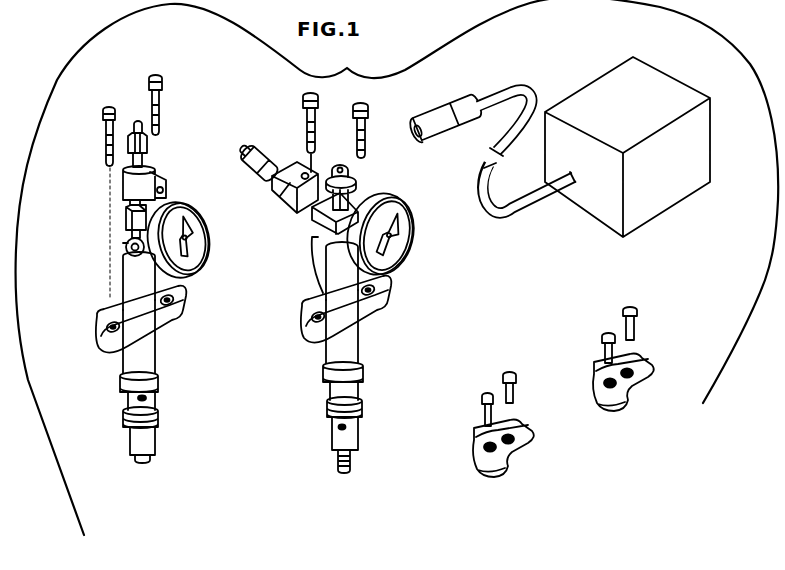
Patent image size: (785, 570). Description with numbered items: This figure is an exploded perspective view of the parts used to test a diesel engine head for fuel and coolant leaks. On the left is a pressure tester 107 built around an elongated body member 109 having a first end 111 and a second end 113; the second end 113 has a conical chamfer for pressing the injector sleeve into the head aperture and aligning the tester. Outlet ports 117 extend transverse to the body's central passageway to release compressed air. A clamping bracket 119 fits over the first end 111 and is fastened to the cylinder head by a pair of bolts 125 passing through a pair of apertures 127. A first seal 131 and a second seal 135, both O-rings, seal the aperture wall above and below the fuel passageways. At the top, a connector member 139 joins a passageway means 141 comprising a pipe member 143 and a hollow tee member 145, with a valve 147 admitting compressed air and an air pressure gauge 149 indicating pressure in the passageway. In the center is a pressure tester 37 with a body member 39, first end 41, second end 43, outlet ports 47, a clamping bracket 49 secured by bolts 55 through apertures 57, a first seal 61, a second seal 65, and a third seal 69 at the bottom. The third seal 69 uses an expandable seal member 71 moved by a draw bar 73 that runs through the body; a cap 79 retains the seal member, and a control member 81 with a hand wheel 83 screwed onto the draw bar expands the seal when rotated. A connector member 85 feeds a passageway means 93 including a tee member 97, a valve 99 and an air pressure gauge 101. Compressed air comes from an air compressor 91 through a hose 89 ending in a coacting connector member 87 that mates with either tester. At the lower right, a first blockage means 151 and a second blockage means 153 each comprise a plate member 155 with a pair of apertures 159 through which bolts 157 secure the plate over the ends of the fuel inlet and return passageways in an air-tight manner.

The pressure tester 37 is at (333, 305).
The body member 39 is at (325, 285).
The first end 41 is at (327, 268).
The second end 43 is at (356, 440).
The outlet ports 47 is at (340, 427).
The clamping bracket 49 is at (300, 347).
The bolts 55 is at (307, 116).
The apertures 57 is at (378, 291).
The first seal 61 is at (365, 366).
The second seal 65 is at (364, 400).
The third seal 69 is at (352, 461).
The expandable seal member 71 is at (340, 462).
The draw bar 73 is at (362, 175).
The cap 79 is at (344, 474).
The control member 81 is at (357, 185).
The hand wheel 83 is at (338, 169).
The connector member 85 is at (265, 132).
The connector member 87 is at (462, 100).
The hose 89 is at (521, 208).
The air compressor 91 is at (680, 193).
The passageway means 93 is at (302, 225).
The tee member 97 is at (316, 242).
The valve 99 is at (300, 190).
The air pressure gauge 101 is at (396, 250).
The pressure tester 107 is at (138, 282).
The body member 109 is at (118, 292).
The first end 111 is at (123, 272).
The second end 113 is at (136, 457).
The outlet ports 117 is at (144, 398).
The clamping bracket 119 is at (165, 325).
The bolts 125 is at (106, 127).
The apertures 127 is at (174, 297).
The first seal 131 is at (120, 383).
The second seal 135 is at (157, 414).
The connector member 139 is at (152, 154).
The passageway means 141 is at (116, 208).
The pipe member 143 is at (126, 252).
The tee member 145 is at (126, 226).
The valve 147 is at (128, 185).
The air pressure gauge 149 is at (198, 208).
The first blockage means 151 is at (490, 490).
The second blockage means 153 is at (644, 400).
The plate member 155 is at (505, 458).
The bolts 157 is at (512, 395).
The apertures 159 is at (488, 445).